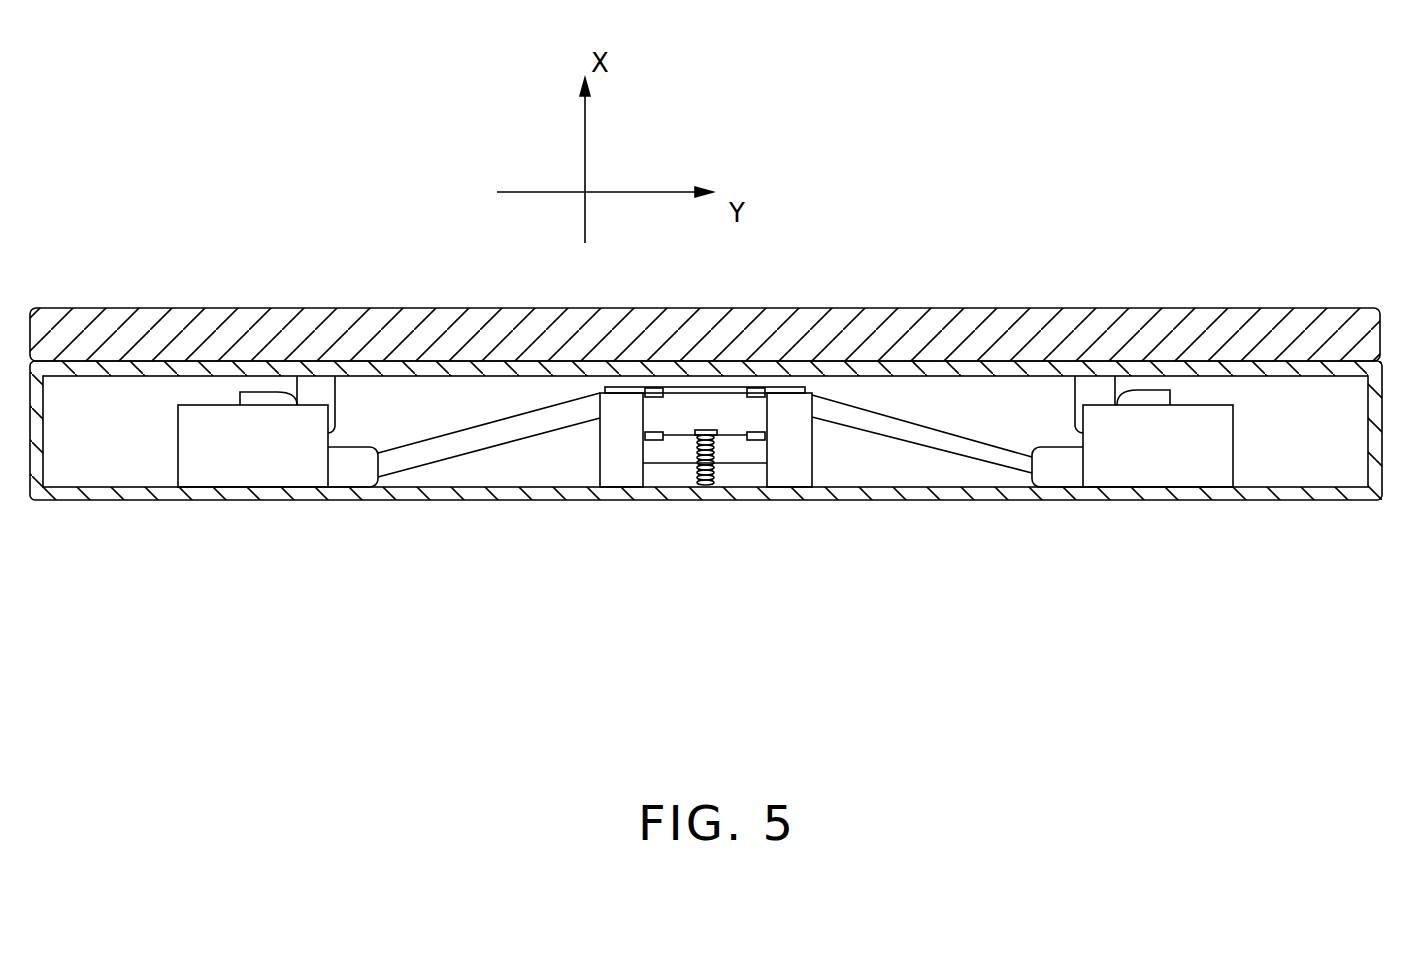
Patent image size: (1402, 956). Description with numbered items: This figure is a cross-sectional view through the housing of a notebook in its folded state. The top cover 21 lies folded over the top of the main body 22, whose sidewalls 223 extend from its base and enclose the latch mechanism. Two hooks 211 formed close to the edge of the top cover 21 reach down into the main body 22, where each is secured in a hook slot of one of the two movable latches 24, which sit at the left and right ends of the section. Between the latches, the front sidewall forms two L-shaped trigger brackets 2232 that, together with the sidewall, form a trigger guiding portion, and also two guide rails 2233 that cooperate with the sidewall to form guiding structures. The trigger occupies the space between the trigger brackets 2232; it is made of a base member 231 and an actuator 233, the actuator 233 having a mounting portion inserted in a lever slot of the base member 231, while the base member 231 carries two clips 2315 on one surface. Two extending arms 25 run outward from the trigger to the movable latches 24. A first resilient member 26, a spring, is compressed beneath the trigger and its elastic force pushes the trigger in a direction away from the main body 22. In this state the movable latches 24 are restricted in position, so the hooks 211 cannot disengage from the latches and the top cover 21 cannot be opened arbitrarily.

The top cover 21 is at (1223, 327).
The hooks 211 is at (318, 385).
The main body 22 is at (1295, 492).
The sidewalls 223 is at (33, 427).
The guide rails 2233 is at (235, 433).
The movable latches 24 is at (348, 475).
The extending arms 25 is at (917, 430).
The trigger brackets 2232 is at (623, 445).
The base member 231 is at (675, 450).
The actuator 233 is at (703, 405).
The clips 2315 is at (755, 437).
The first resilient member 26 is at (708, 467).